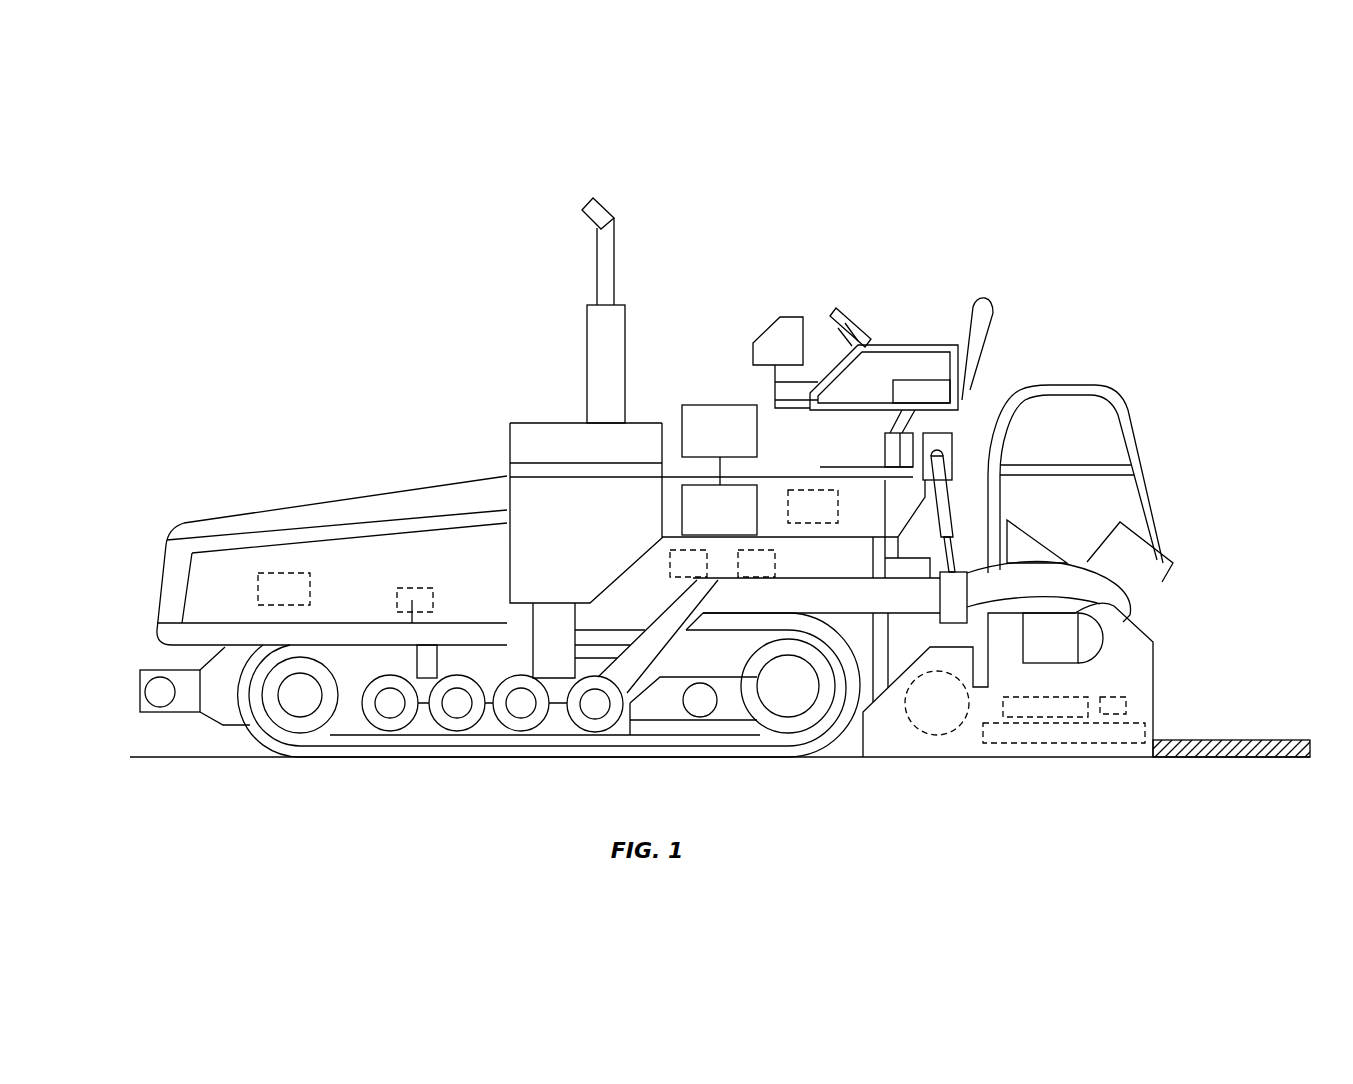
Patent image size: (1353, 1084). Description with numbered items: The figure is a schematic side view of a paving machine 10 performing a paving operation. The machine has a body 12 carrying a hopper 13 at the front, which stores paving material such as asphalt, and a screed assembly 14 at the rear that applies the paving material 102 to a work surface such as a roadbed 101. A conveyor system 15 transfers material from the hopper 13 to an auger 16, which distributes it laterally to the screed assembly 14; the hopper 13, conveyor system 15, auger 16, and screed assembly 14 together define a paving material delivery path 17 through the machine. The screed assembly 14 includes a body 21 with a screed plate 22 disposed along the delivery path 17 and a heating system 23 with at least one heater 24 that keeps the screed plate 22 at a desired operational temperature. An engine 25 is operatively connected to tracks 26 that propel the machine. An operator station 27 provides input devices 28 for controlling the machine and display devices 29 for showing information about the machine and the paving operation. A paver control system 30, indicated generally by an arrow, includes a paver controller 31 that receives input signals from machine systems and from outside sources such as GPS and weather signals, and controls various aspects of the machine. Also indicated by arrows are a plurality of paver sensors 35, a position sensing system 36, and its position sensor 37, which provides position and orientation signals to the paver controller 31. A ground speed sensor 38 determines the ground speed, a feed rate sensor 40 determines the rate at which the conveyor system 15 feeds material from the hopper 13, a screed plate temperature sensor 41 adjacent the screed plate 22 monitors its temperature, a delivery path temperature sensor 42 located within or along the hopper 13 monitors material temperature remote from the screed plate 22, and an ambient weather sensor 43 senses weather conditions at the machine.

The paving machine 10 is at (400, 278).
The body 12 is at (647, 600).
The hopper 13 is at (332, 542).
The screed assembly 14 is at (1053, 712).
The conveyor system 15 is at (461, 610).
The auger 16 is at (932, 717).
The paving material delivery path 17 is at (484, 440).
The body 21 is at (1130, 650).
The screed plate 22 is at (1032, 733).
The heating system 23 is at (1172, 732).
The heater 24 is at (1062, 703).
The engine 25 is at (545, 455).
The tracks 26 is at (538, 748).
The operator station 27 is at (917, 301).
The input devices 28 is at (862, 322).
The display devices 29 is at (810, 328).
The paver control system 30 is at (652, 250).
The paver controller 31 is at (803, 512).
The paver sensors 35 is at (711, 228).
The position sensing system 36 is at (748, 252).
The position sensor 37 is at (781, 250).
The ground speed sensor 38 is at (672, 565).
The feed rate sensor 40 is at (408, 598).
The screed plate temperature sensor 41 is at (1108, 710).
The delivery path temperature sensor 42 is at (277, 583).
The ambient weather sensor 43 is at (763, 570).
The roadbed 101 is at (143, 757).
The paving material 102 is at (1235, 740).